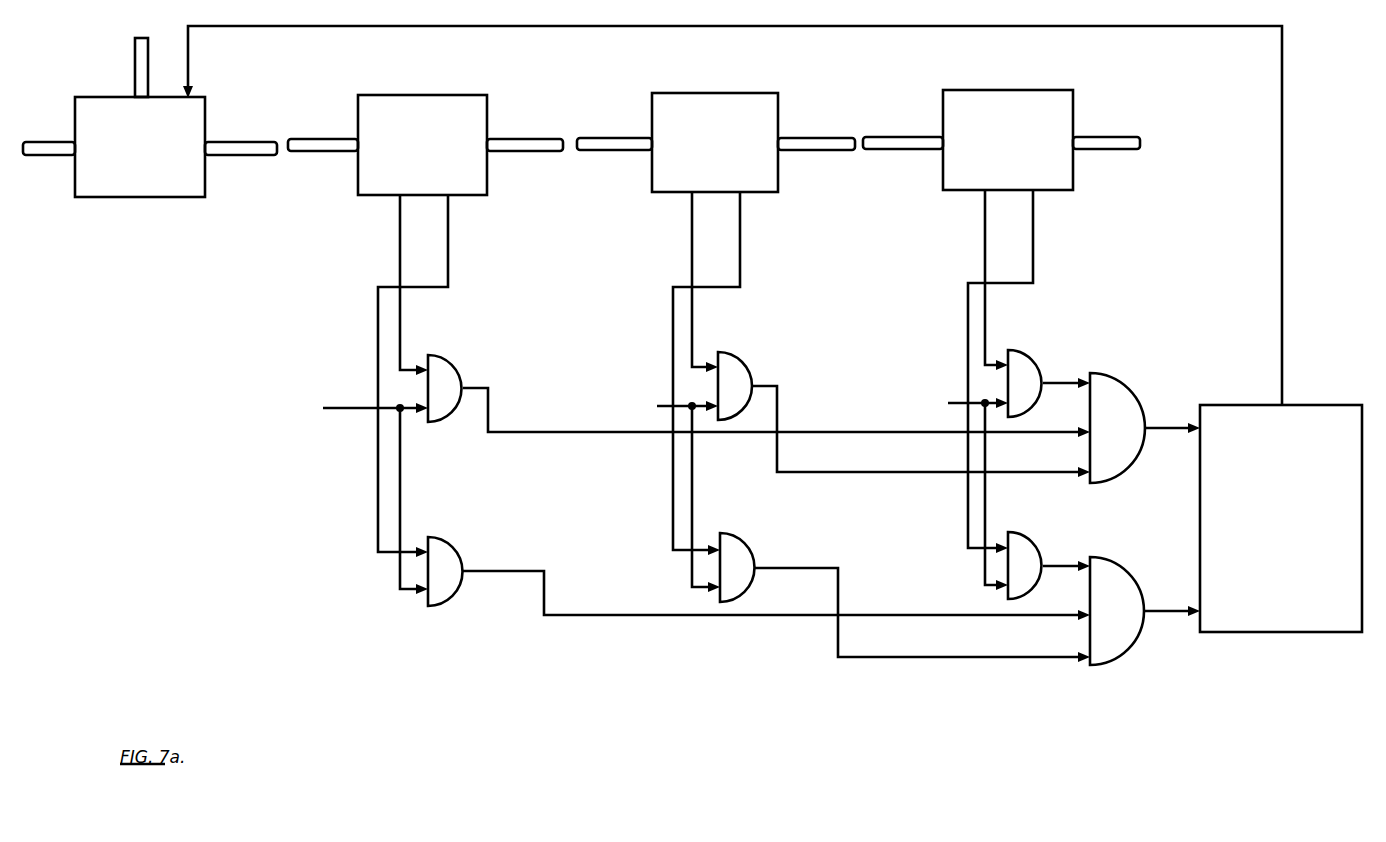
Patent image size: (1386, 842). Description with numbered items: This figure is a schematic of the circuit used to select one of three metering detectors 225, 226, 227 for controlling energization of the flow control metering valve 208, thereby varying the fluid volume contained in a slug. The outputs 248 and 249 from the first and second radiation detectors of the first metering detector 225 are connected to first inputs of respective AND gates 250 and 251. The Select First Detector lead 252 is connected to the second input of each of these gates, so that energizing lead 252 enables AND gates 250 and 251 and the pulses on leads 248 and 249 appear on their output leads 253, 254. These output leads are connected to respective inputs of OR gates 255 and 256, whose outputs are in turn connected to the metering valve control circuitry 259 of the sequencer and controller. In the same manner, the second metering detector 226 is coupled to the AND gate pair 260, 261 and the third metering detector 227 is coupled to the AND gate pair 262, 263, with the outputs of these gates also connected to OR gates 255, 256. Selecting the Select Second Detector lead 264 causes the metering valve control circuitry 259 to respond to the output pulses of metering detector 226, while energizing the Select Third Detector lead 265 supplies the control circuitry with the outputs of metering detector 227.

The flow control metering valve 208 is at (202, 107).
The first metering detector 225 is at (478, 104).
The second metering detector 226 is at (770, 102).
The third metering detector 227 is at (1065, 104).
The output of first radiation detector 248 is at (398, 222).
The output of second radiation detector 249 is at (450, 222).
The AND gate 250 is at (452, 371).
The AND gate 251 is at (447, 553).
The Select First Detector lead 252 is at (355, 410).
The output lead 253 is at (540, 435).
The output lead 254 is at (575, 614).
The OR gate 255 is at (1125, 395).
The OR gate 256 is at (1118, 573).
The metering valve control circuitry 259 is at (1287, 632).
The AND gate 260 is at (738, 370).
The AND gate 261 is at (742, 551).
The AND gate 262 is at (1028, 365).
The AND gate 263 is at (1030, 550).
The Select Second Detector lead 264 is at (680, 410).
The Select Third Detector lead 265 is at (973, 407).